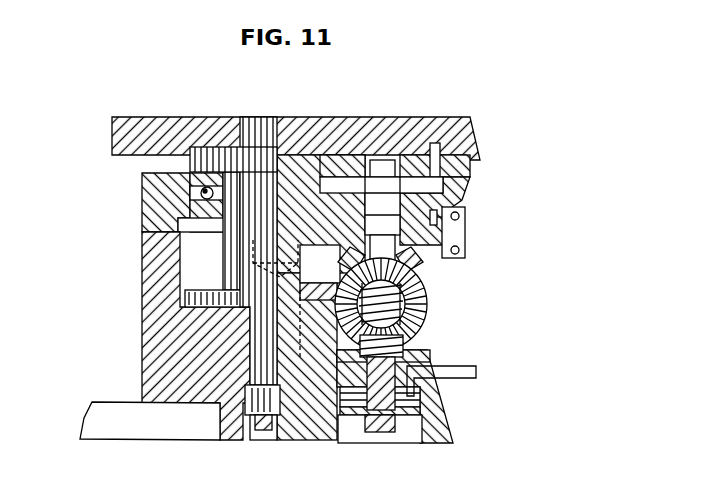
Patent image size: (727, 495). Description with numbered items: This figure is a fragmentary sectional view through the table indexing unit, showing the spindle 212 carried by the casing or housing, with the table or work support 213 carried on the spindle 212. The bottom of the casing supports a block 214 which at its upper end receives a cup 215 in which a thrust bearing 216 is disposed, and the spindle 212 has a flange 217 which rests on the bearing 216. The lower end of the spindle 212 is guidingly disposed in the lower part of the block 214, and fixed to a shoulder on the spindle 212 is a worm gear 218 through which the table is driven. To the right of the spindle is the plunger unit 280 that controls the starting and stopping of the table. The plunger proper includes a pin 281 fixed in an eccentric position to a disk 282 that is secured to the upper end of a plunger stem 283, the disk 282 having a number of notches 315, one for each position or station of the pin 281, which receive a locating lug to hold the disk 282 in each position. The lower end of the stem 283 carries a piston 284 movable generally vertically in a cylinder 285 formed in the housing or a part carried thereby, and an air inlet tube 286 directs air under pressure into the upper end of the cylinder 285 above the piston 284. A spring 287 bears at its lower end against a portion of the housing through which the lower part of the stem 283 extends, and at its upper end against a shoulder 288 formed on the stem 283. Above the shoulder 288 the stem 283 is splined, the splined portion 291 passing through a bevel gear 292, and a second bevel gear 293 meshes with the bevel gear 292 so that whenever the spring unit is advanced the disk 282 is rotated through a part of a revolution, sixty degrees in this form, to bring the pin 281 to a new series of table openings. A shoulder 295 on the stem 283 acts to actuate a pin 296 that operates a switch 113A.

The switch 113A is at (466, 226).
The spindle 212 is at (250, 110).
The table or work support 213 is at (135, 117).
The block 214 is at (150, 279).
The cup 215 is at (148, 185).
The thrust bearing 216 is at (194, 205).
The flange 217 is at (213, 148).
The worm gear 218 is at (192, 298).
The plunger unit 280 is at (466, 174).
The pin 281 is at (441, 160).
The disk 282 is at (432, 158).
The plunger stem 283 is at (402, 358).
The piston 284 is at (410, 400).
The cylinder 285 is at (342, 437).
The air inlet tube 286 is at (475, 372).
The spring 287 is at (405, 325).
The shoulder 288 is at (408, 281).
The splined portion 291 is at (447, 238).
The bevel gear 292 is at (422, 263).
The second bevel gear 293 is at (420, 297).
The shoulder 295 is at (445, 195).
The pin 296 is at (443, 204).
The notches 315 is at (325, 158).